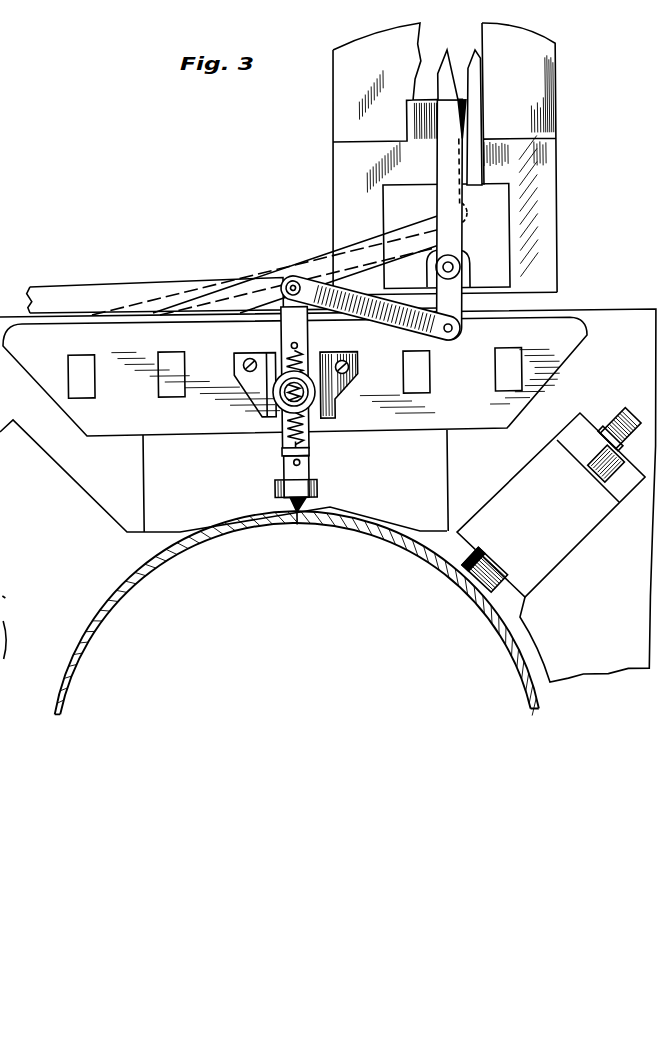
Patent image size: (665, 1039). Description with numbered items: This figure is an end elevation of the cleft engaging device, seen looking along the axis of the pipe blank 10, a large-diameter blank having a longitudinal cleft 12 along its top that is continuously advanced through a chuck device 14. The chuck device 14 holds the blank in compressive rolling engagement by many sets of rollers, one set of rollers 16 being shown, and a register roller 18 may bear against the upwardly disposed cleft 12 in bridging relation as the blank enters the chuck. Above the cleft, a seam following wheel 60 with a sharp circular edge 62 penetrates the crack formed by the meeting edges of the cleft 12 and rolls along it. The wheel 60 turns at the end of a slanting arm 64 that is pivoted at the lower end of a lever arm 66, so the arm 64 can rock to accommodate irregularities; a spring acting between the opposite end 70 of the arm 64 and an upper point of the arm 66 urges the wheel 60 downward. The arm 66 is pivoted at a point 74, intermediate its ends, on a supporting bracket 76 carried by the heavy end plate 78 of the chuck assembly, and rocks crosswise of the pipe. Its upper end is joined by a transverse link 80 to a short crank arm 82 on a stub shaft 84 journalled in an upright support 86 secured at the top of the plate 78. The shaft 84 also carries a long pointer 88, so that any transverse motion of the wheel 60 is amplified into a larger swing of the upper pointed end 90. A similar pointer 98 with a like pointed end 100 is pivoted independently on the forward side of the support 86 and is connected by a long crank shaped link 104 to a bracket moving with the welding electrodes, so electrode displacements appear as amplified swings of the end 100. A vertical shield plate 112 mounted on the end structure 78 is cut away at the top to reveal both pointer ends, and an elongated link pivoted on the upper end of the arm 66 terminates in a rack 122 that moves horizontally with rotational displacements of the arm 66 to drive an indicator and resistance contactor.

The pipe blank 10 is at (70, 684).
The longitudinal cleft 12 is at (296, 514).
The chuck device 14 is at (604, 671).
The set of rollers 16 is at (472, 594).
The register roller 18 is at (10, 586).
The seam following wheel 60 is at (309, 480).
The sharp circular edge 62 is at (304, 507).
The arm 64 is at (284, 476).
The lever arm 66 is at (281, 334).
The opposite end of the arm 70 is at (280, 452).
The pivot point 74 is at (316, 396).
The supporting bracket 76 is at (348, 383).
The end plate 78 is at (620, 318).
The transverse link 80 is at (386, 323).
The crank arm 82 is at (462, 305).
The stub shaft 84 is at (461, 262).
The upright support 86 is at (468, 273).
The pointer 88 is at (440, 160).
The upper pointed end 90 is at (449, 81).
The second pointer 98 is at (471, 118).
The upper pointed end 100 is at (490, 66).
The crank shaped link 104 is at (311, 254).
The shield plate 112 is at (559, 207).
The rack 122 is at (97, 283).